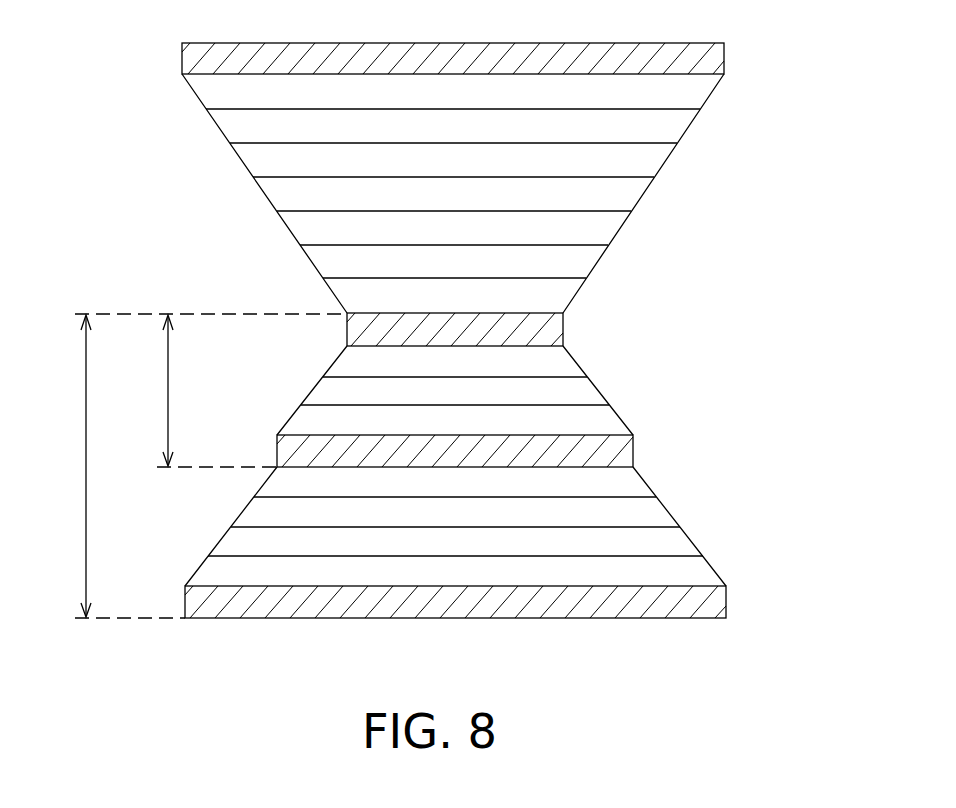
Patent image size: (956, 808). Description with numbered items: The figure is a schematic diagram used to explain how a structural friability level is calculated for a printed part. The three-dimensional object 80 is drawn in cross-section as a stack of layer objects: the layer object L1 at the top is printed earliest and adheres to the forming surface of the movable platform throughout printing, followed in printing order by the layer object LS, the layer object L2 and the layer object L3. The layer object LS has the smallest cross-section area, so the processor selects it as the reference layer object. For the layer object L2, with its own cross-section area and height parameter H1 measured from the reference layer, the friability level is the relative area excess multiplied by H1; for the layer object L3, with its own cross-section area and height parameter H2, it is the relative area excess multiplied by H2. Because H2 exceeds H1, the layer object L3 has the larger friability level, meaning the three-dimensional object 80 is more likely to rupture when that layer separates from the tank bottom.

The 3D object 80 is at (648, 190).
The layer object L1 is at (717, 57).
The layer object LS is at (553, 332).
The layer object L2 is at (617, 450).
The layer object L3 is at (713, 600).
The height parameter H1 is at (205, 391).
The height parameter H2 is at (197, 466).